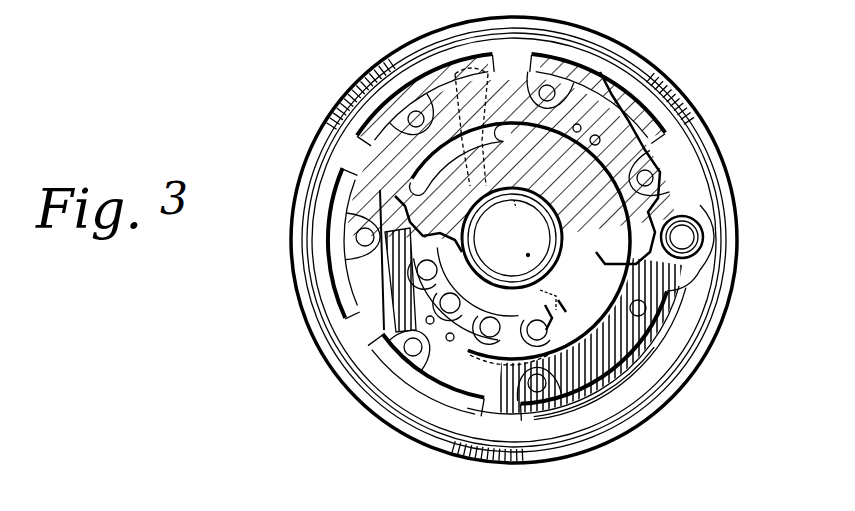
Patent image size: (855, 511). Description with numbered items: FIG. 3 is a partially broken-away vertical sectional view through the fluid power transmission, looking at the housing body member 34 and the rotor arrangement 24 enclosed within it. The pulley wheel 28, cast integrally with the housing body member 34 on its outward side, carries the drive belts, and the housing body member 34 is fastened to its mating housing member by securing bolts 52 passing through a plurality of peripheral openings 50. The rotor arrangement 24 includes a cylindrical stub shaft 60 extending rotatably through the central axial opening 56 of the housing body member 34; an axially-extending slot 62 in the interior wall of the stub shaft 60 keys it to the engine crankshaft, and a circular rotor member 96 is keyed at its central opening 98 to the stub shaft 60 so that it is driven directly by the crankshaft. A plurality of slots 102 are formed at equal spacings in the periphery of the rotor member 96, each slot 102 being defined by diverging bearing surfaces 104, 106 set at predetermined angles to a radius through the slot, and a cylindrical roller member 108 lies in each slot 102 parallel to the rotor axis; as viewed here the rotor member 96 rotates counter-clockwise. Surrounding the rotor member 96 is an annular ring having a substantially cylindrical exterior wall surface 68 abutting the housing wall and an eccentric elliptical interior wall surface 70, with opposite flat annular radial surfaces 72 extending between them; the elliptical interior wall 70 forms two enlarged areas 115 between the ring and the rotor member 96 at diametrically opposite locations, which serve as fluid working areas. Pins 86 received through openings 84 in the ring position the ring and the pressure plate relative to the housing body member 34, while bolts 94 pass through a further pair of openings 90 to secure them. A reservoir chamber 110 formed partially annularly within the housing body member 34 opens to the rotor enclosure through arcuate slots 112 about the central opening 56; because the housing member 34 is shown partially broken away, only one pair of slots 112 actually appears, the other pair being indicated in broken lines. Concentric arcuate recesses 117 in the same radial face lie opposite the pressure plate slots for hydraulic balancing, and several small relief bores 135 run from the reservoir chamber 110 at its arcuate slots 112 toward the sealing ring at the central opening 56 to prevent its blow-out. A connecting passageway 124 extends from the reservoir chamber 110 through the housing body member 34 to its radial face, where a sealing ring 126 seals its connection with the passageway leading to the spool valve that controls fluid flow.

The pulley wheel 28 is at (552, 12).
The housing body member 34 is at (640, 80).
The reservoir chamber 110 is at (678, 108).
The sealing ring 126 is at (702, 214).
The connecting passageway 124 is at (688, 239).
The openings 50 is at (400, 62).
The securing bolts 52 is at (367, 121).
The arcuate slots 112 is at (492, 72).
The relief bores 135 is at (544, 253).
The stub shaft 60 is at (475, 233).
The arcuate recesses 117 is at (395, 284).
The central axial opening 56 is at (560, 248).
The axially-extending slot 62 is at (496, 275).
The rotor arrangement 24 is at (425, 258).
The central opening 98 is at (490, 290).
The rotor member 96 is at (467, 305).
The slots 102 is at (502, 319).
The interior wall surface 70 is at (592, 308).
The openings 90 is at (432, 320).
The bolts 94 is at (446, 337).
The pins 86 is at (424, 348).
The openings 84 is at (449, 342).
The flat annular radial surfaces 72 is at (485, 336).
The bearing surface 104 is at (480, 350).
The bearing surface 106 is at (512, 356).
The cylindrical roller member 108 is at (540, 365).
The exterior wall surface 68 is at (580, 340).
The enlarged areas 115 is at (500, 365).